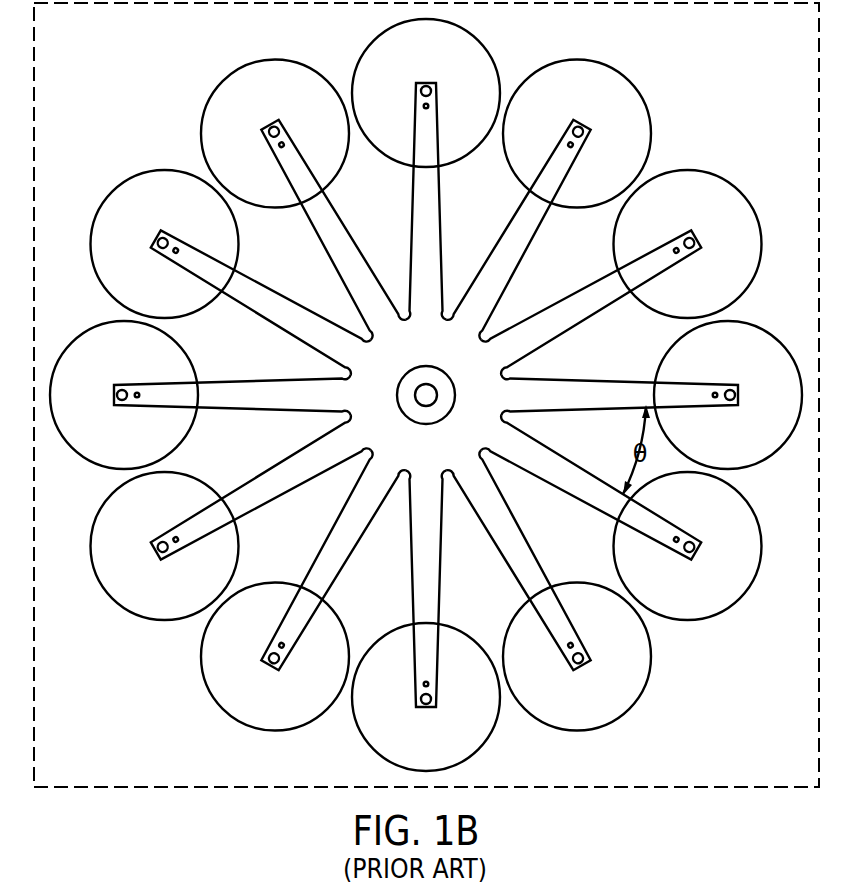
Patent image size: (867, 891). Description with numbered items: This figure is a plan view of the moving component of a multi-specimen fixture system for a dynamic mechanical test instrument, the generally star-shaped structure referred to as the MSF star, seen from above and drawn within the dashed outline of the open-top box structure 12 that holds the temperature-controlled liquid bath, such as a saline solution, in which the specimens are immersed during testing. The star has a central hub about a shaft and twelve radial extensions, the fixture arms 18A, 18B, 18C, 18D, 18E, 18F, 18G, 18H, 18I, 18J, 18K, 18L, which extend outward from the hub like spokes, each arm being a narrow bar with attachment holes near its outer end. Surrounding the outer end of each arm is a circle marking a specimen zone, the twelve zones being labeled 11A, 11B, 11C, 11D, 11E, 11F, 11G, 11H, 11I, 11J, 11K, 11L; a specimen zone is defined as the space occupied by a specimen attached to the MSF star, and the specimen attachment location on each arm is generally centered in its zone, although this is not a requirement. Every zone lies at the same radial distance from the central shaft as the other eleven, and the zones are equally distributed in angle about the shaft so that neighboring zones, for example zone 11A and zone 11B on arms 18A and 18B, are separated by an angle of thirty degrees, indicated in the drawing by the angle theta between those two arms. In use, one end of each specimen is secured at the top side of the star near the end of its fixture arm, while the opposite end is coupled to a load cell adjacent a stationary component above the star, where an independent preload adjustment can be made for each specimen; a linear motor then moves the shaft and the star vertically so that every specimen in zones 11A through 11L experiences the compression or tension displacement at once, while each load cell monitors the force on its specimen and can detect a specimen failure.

The open-top box structure 12 is at (688, 787).
The specimen zone 11A is at (752, 409).
The specimen zone 11B is at (706, 581).
The specimen zone 11C is at (578, 704).
The specimen zone 11D is at (409, 752).
The specimen zone 11E is at (235, 707).
The specimen zone 11F is at (108, 581).
The specimen zone 11G is at (65, 409).
The specimen zone 11H is at (110, 237).
The specimen zone 11I is at (240, 112).
The specimen zone 11J is at (410, 67).
The specimen zone 11K is at (579, 114).
The specimen zone 11L is at (704, 237).
The fixture arm 18A is at (567, 380).
The fixture arm 18B is at (512, 426).
The fixture arm 18C is at (509, 509).
The fixture arm 18D is at (441, 537).
The fixture arm 18E is at (364, 532).
The fixture arm 18F is at (321, 473).
The fixture arm 18G is at (282, 410).
The fixture arm 18H is at (289, 333).
The fixture arm 18I is at (343, 281).
The fixture arm 18J is at (411, 253).
The fixture arm 18K is at (488, 258).
The fixture arm 18L is at (540, 312).